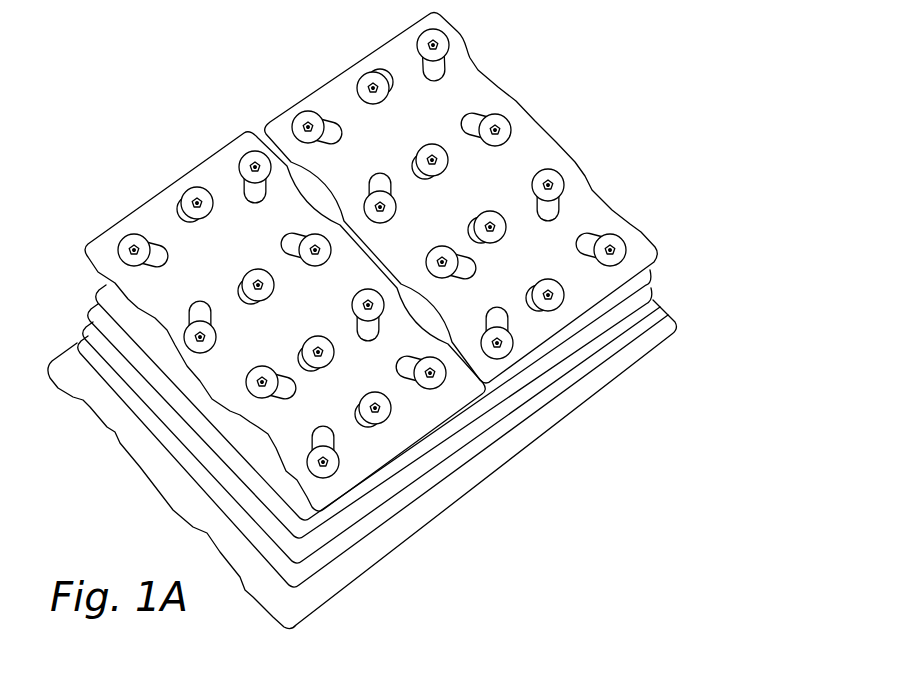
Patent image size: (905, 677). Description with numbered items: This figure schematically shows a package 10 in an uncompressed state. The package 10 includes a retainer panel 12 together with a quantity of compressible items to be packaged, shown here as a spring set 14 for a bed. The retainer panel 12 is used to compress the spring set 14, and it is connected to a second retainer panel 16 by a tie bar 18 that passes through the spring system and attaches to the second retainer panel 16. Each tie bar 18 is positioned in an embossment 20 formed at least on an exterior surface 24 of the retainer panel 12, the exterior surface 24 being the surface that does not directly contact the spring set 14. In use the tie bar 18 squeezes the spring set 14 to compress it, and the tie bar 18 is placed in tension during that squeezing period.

The package 10 is at (182, 115).
The retainer panel 12 is at (463, 40).
The spring set 14 is at (93, 297).
The second retainer panel 16 is at (290, 623).
The tie bar 18 is at (338, 470).
The embossment 20 is at (441, 385).
The exterior surface 24 is at (532, 342).